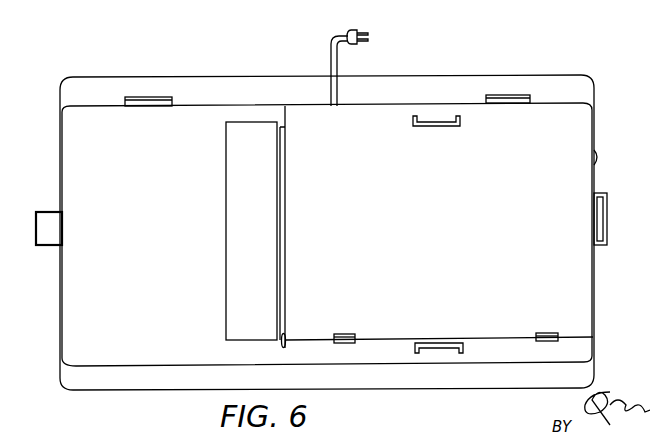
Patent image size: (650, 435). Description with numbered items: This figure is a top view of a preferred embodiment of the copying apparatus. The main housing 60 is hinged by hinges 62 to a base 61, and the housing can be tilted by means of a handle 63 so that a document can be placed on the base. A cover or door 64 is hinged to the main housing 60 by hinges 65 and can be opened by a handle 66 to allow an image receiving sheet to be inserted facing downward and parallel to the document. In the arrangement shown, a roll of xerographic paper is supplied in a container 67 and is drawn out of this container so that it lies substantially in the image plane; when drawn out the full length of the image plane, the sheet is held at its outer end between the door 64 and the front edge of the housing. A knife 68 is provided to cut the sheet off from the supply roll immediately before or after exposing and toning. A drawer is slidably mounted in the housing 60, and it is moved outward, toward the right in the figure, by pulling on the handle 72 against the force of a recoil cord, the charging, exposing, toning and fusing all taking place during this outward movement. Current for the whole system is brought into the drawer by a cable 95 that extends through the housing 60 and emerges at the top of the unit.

The main housing 60 is at (75, 302).
The base 61 is at (80, 383).
The hinges 62 is at (154, 96).
The handle 63 is at (438, 343).
The cover or door 64 is at (572, 134).
The hinges 65 is at (352, 334).
The handle 66 is at (445, 128).
The container 67 is at (229, 188).
The knife 68 is at (287, 341).
The handle 72 is at (607, 206).
The cable 95 is at (331, 42).